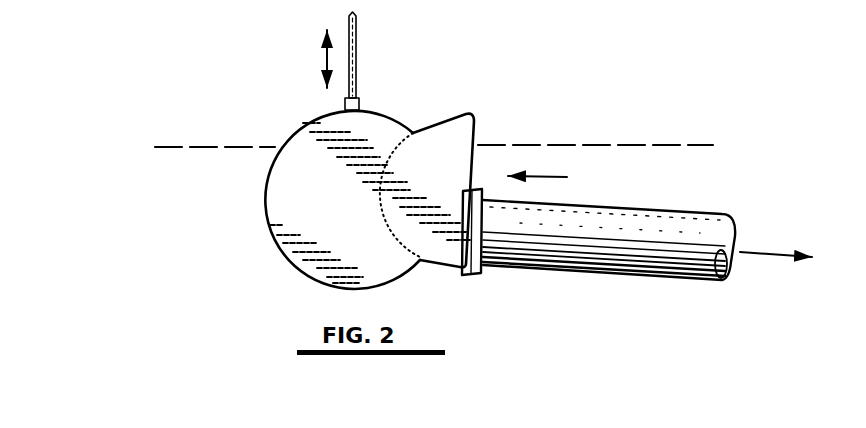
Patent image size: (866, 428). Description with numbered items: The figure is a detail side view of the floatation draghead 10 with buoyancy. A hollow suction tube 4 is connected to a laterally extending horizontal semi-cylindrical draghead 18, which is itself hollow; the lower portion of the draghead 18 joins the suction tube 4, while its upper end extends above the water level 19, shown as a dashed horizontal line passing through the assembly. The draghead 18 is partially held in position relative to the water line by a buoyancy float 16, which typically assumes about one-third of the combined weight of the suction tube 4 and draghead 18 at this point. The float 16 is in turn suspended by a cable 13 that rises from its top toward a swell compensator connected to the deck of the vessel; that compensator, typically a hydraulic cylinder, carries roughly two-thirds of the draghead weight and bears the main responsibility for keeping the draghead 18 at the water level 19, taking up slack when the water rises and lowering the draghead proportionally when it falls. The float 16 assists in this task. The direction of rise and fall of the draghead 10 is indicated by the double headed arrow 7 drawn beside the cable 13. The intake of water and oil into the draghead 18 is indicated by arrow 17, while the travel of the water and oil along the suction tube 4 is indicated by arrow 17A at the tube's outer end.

The floatation draghead 10 is at (256, 113).
The double headed arrow 7 is at (326, 60).
The cable 13 is at (357, 58).
The buoyancy float 16 is at (387, 110).
The draghead 18 is at (477, 120).
The water level 19 is at (656, 138).
The arrow 17 is at (567, 177).
The suction tube 4 is at (659, 208).
The arrow 17A is at (757, 259).